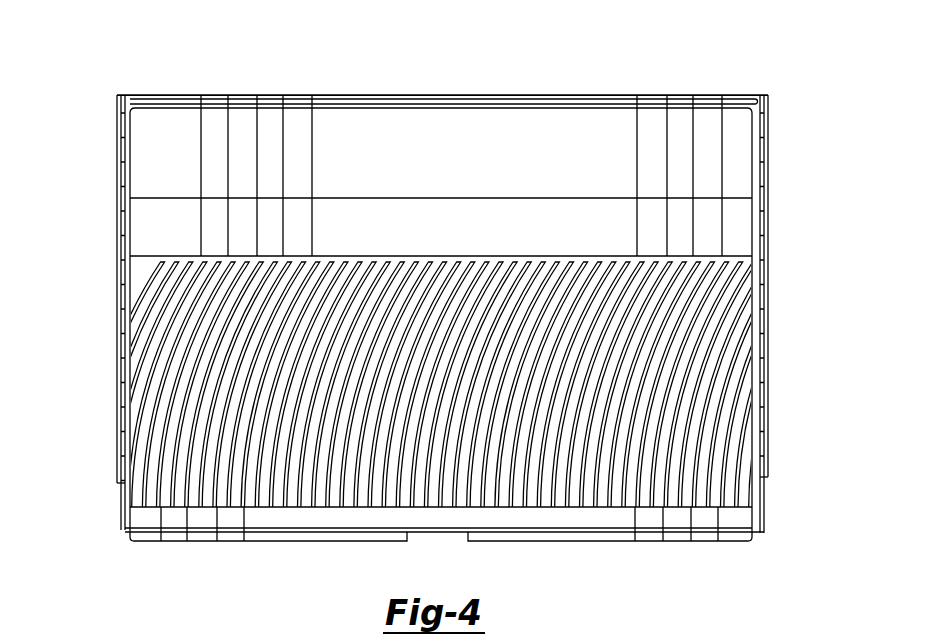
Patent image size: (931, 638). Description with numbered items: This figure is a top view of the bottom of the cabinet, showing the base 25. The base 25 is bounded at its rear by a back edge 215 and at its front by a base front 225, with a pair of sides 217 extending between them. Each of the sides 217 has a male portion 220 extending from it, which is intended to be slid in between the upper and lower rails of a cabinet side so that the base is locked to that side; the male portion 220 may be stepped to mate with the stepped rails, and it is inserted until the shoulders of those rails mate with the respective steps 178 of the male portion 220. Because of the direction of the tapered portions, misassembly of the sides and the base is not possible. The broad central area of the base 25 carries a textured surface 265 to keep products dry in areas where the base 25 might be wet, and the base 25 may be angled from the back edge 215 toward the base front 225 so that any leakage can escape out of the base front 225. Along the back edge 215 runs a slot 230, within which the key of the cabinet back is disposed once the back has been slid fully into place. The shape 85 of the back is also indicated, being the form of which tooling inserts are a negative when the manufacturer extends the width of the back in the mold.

The base 25 is at (162, 30).
The back edge 215 is at (386, 99).
The slot 230 is at (570, 100).
The sides 217 is at (125, 131).
The shape 85 is at (313, 150).
The male portion 220 is at (124, 372).
The steps 178 is at (762, 357).
The textured surface 265 is at (178, 432).
The base front 225 is at (348, 537).